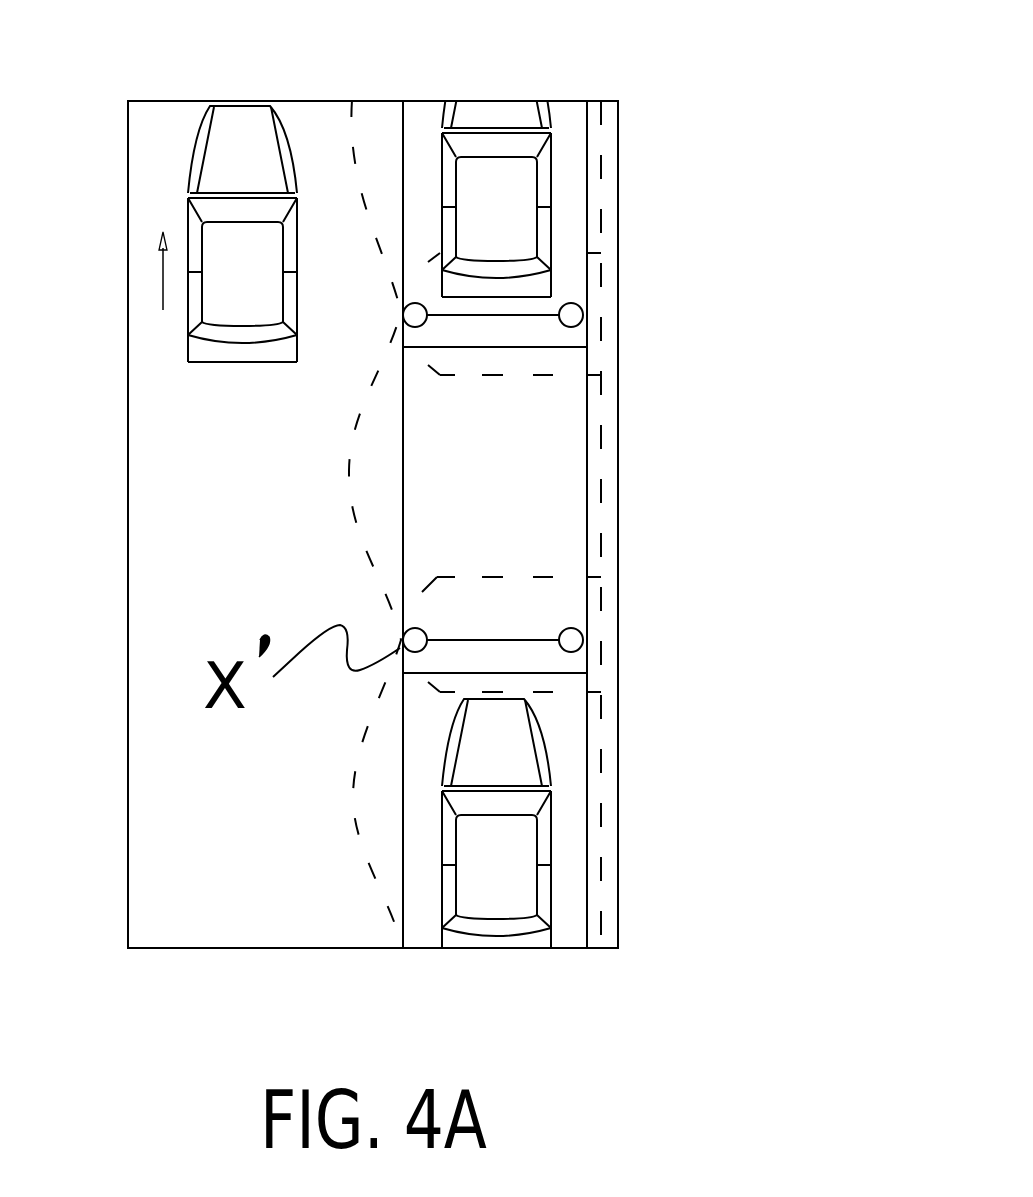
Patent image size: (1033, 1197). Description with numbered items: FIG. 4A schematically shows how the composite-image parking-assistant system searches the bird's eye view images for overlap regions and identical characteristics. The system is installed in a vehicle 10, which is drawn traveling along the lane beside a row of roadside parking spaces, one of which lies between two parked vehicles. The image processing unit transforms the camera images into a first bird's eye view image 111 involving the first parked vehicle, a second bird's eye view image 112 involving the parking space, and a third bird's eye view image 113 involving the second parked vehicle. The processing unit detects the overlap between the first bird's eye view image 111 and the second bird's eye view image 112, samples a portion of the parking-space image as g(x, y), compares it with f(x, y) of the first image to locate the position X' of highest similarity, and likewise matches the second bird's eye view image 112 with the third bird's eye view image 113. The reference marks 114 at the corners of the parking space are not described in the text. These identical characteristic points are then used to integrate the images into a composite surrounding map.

The vehicle 10 is at (195, 147).
The first bird's eye view image 111 is at (600, 827).
The second bird's eye view image 112 is at (600, 447).
The third bird's eye view image 113 is at (600, 237).
The posts 114 is at (600, 323).